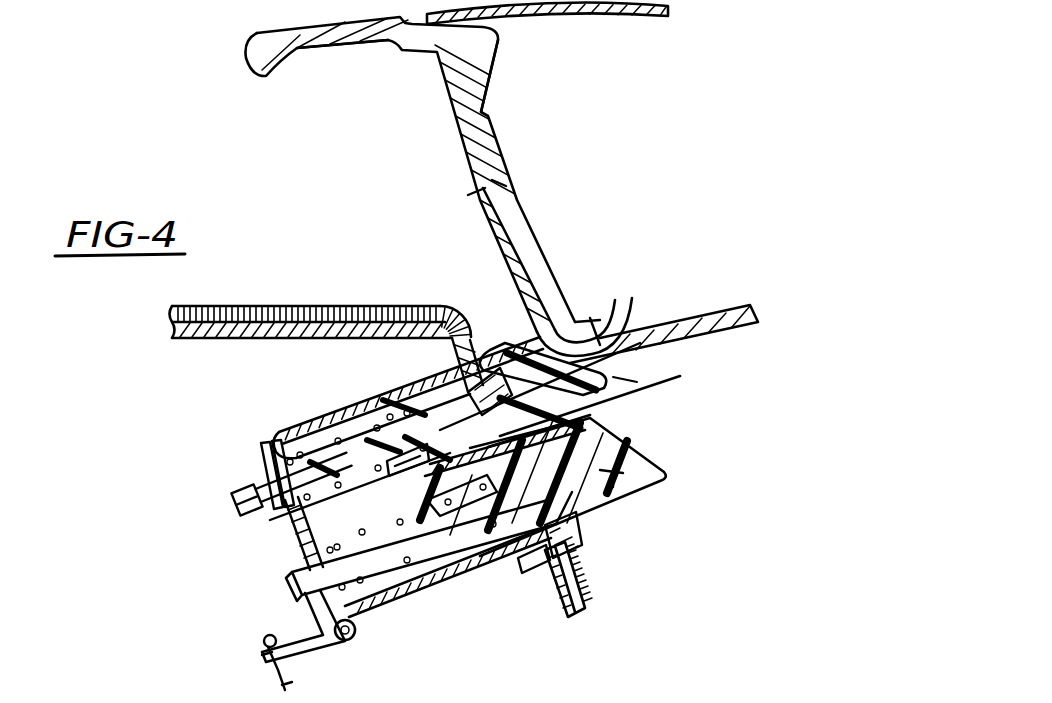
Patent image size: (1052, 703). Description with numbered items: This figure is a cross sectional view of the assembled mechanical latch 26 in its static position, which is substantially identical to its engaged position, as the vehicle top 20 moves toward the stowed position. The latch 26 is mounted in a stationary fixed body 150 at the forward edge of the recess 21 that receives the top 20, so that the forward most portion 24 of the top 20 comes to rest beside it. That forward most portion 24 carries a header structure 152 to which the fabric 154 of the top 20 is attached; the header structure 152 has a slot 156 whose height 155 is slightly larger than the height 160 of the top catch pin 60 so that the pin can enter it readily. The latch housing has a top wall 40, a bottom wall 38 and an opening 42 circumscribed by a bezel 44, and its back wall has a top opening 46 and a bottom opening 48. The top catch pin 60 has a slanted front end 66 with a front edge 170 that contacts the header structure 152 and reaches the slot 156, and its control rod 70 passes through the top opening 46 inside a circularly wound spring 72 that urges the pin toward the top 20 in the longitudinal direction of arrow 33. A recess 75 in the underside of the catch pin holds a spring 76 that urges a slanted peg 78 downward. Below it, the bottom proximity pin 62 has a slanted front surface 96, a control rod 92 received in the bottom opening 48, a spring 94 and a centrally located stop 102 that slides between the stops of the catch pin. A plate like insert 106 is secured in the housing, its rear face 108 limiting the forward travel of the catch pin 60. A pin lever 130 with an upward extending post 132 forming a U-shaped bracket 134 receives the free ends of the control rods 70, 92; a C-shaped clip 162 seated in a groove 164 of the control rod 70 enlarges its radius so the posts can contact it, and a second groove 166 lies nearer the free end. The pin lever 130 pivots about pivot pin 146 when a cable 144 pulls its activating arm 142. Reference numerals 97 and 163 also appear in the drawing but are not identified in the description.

The vehicle top 20 is at (252, 27).
The forward most portion 24 is at (322, 50).
The fabric 154 is at (668, 16).
The header structure 152 is at (483, 70).
The height of slot 155 is at (477, 207).
The slot 156 is at (500, 185).
The arrow 33 is at (400, 251).
The bezel 44 is at (536, 330).
The slanted front surface 66 is at (575, 350).
The hook tab 163 is at (583, 325).
The height of top catch pin 160 is at (612, 345).
The front edge 170 is at (628, 336).
The pin lever 130 is at (170, 337).
The recess 75 is at (460, 340).
The slanted peg 78 is at (448, 372).
The spring 76 is at (540, 370).
The top wall 40 is at (340, 400).
The stop bar 97 is at (380, 430).
The spring 72 is at (280, 440).
The control rod 70 is at (323, 452).
The top opening 46 is at (263, 447).
The U-shaped bracket 134 is at (255, 449).
The C-shaped clip 162 is at (257, 468).
The groove 164 is at (237, 486).
The second groove 166 is at (257, 520).
The upward extending post 132 is at (292, 545).
The bottom opening 48 is at (305, 573).
The spring 94 is at (410, 587).
The rear face 108 is at (463, 568).
The control rod 92 is at (297, 637).
The activating arm 142 is at (330, 637).
The pivot pin 146 is at (363, 627).
The cable 144 is at (272, 674).
The stop 102 is at (393, 485).
The bottom wall 38 is at (527, 558).
The fixed body 150 is at (577, 587).
The opening 42 is at (577, 517).
The mechanical latch 26 is at (470, 617).
The slanted front surface 96 is at (623, 437).
The bottom proximity pin 62 is at (613, 477).
The insert 106 is at (593, 420).
The top catch pin 60 is at (600, 392).
The recess 21 is at (753, 417).